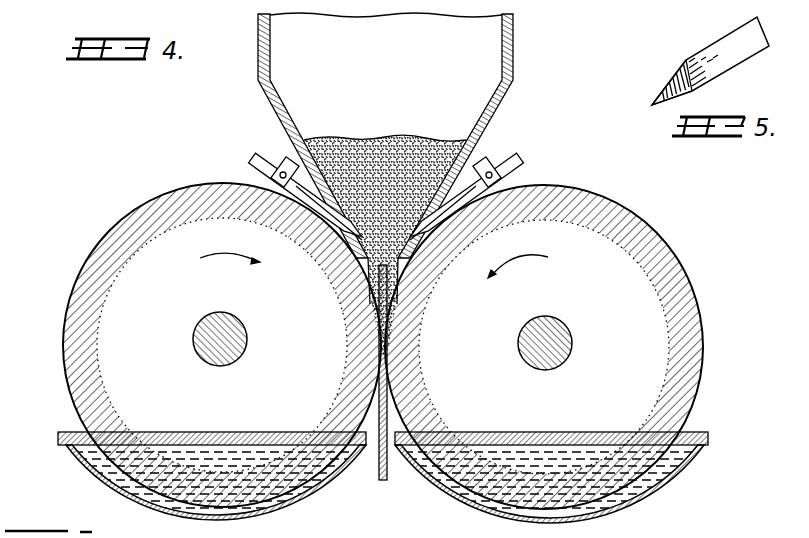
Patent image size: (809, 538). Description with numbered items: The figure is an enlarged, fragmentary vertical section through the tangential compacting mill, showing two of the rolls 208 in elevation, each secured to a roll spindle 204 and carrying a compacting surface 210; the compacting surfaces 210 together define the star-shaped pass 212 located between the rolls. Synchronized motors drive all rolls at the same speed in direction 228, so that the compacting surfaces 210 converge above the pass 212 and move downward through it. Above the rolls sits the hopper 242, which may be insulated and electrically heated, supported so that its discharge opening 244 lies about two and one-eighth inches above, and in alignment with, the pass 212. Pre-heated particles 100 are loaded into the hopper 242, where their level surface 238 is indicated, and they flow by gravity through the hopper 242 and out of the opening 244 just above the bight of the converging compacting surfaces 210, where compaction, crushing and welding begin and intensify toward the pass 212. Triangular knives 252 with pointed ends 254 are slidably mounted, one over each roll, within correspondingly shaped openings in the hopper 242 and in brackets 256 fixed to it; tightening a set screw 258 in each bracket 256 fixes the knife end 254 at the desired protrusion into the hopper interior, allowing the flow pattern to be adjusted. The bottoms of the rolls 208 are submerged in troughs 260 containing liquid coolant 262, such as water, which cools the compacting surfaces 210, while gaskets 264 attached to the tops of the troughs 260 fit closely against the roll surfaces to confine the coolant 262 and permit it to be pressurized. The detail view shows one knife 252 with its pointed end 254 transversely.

In FIG. 4, the pre-heated particles 100 is at (368, 153).
In FIG. 4, the roll spindle 204 is at (247, 338).
In FIG. 4, the roll 208 is at (122, 210).
In FIG. 4, the compacting surface 210 is at (205, 183).
In FIG. 4, the star-shaped pass 212 is at (389, 343).
In FIG. 4, the direction of rotation 228 is at (217, 257).
In FIG. 4, the powder level surface 238 is at (432, 153).
In FIG. 4, the hopper 242 is at (511, 95).
In FIG. 4, the discharge opening 244 is at (400, 257).
In FIG. 4, the triangular knife 252 is at (518, 157).
In FIG. 5, the triangular knife 252 is at (714, 53).
In FIG. 5, the pointed knife end 254 is at (678, 82).
In FIG. 4, the bracket 256 is at (490, 155).
In FIG. 4, the set screw 258 is at (500, 172).
In FIG. 4, the trough 260 is at (126, 497).
In FIG. 4, the liquid coolant 262 is at (100, 465).
In FIG. 4, the gasket 264 is at (80, 432).